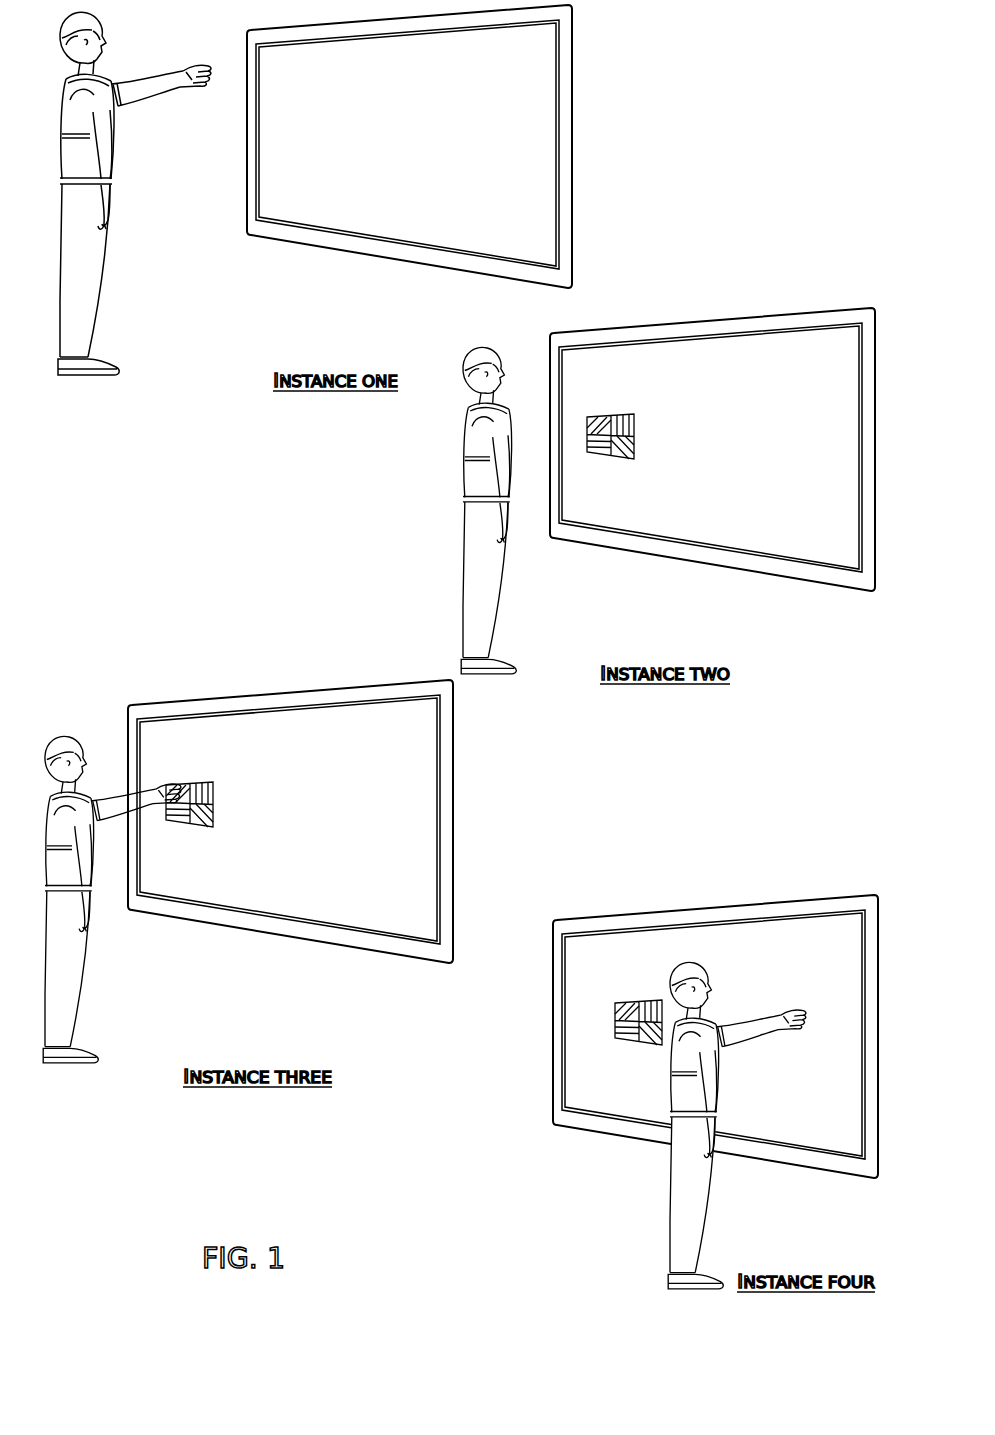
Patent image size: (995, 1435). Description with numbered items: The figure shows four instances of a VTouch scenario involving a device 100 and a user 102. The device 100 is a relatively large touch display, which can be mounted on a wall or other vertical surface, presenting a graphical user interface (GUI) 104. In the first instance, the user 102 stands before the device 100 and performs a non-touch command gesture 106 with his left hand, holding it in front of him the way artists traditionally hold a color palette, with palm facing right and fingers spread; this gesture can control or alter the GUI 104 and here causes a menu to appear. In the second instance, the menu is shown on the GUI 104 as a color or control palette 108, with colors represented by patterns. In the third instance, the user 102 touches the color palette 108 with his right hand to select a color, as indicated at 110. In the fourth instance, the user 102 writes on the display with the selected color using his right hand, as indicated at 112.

The device 100 is at (573, 52).
The user 102 is at (90, 331).
The graphical user interface (GUI) 104 is at (380, 213).
The non-touch command gesture 106 is at (185, 114).
The color palette 108 is at (636, 423).
The selection from the color palette 110 is at (115, 831).
The writing on the display 112 is at (793, 1073).